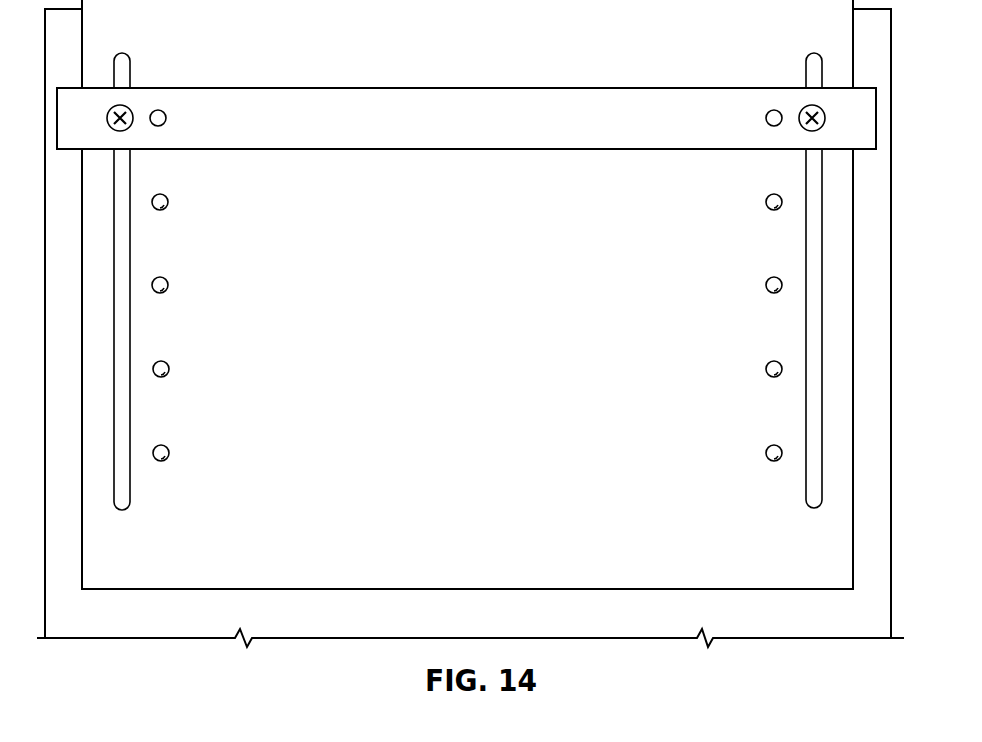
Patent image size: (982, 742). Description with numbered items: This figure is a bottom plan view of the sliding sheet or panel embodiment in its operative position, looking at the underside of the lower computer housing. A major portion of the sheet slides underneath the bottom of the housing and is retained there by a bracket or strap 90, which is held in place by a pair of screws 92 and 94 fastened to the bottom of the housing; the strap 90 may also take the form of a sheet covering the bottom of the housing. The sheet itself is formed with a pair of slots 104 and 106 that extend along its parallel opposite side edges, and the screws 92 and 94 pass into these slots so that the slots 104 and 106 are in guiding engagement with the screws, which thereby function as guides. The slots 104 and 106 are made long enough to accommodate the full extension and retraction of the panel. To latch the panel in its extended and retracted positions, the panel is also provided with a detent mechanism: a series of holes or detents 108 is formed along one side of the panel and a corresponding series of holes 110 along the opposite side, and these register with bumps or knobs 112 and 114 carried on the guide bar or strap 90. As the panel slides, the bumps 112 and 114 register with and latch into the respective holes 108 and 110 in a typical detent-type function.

The bracket or strap 90 is at (485, 100).
The screw 92 is at (133, 108).
The screw 94 is at (800, 108).
The slot 104 is at (130, 324).
The slot 106 is at (806, 330).
The holes or detents 108 is at (168, 203).
The holes 110 is at (765, 203).
The bump or knob 112 is at (167, 120).
The bump or knob 114 is at (766, 118).